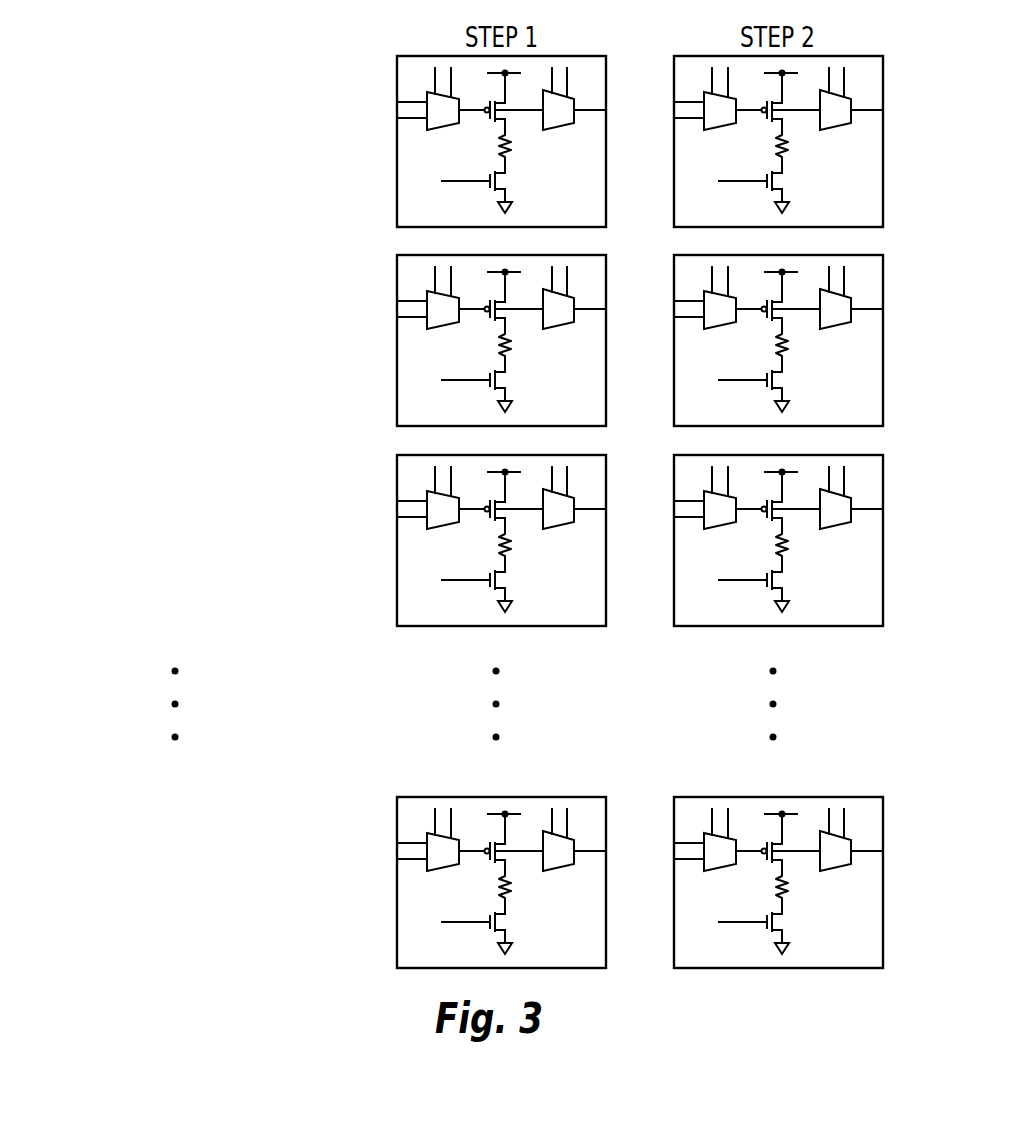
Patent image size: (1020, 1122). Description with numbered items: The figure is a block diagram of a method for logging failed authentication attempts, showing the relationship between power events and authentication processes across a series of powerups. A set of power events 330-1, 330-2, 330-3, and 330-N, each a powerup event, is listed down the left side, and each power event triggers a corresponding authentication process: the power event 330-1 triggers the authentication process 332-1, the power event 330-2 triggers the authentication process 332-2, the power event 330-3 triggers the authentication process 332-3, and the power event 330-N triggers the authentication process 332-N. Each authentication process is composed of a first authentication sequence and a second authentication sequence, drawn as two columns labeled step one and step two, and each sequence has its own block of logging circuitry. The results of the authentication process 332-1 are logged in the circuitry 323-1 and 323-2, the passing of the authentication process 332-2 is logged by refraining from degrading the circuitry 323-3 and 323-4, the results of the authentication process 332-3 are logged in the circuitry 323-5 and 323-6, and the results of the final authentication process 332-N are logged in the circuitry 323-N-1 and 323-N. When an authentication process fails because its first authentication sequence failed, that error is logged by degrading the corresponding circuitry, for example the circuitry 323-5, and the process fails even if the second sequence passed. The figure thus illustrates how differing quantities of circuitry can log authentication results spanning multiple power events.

The circuitry 323-1 is at (408, 143).
The circuitry 323-2 is at (873, 143).
The circuitry 323-3 is at (408, 342).
The circuitry 323-4 is at (873, 342).
The circuitry 323-5 is at (408, 542).
The circuitry 323-6 is at (873, 542).
The circuitry 323-N-1 is at (408, 883).
The circuitry 323-N is at (873, 883).
The power event 330-1 is at (130, 104).
The power event 330-2 is at (130, 304).
The power event 330-3 is at (130, 503).
The power event 330-N is at (130, 845).
The authentication process 332-1 is at (132, 178).
The authentication process 332-2 is at (132, 378).
The authentication process 332-3 is at (132, 577).
The authentication process 332-N is at (132, 919).